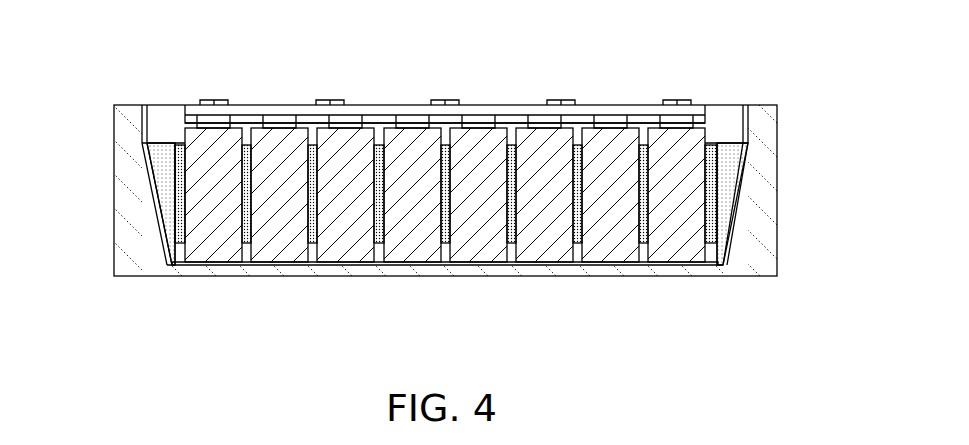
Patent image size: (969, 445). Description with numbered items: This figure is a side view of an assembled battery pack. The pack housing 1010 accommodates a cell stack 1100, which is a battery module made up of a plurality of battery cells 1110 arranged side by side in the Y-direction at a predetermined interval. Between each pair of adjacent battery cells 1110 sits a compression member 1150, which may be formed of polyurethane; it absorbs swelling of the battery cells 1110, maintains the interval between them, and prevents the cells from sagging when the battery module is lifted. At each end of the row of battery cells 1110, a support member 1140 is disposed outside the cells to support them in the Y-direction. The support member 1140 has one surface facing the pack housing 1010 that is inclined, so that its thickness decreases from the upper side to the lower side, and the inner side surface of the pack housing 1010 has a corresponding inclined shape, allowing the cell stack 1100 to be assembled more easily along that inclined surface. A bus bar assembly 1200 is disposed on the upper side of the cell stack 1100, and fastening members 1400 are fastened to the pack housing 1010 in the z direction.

The pack housing 1010 is at (770, 232).
The cell stack 1100 is at (158, 208).
The battery cell 1110 is at (548, 248).
The support member 1140 is at (730, 190).
The compression member 1150 is at (647, 256).
The bus bar assembly 1200 is at (190, 107).
The fastening member 1400 is at (675, 98).